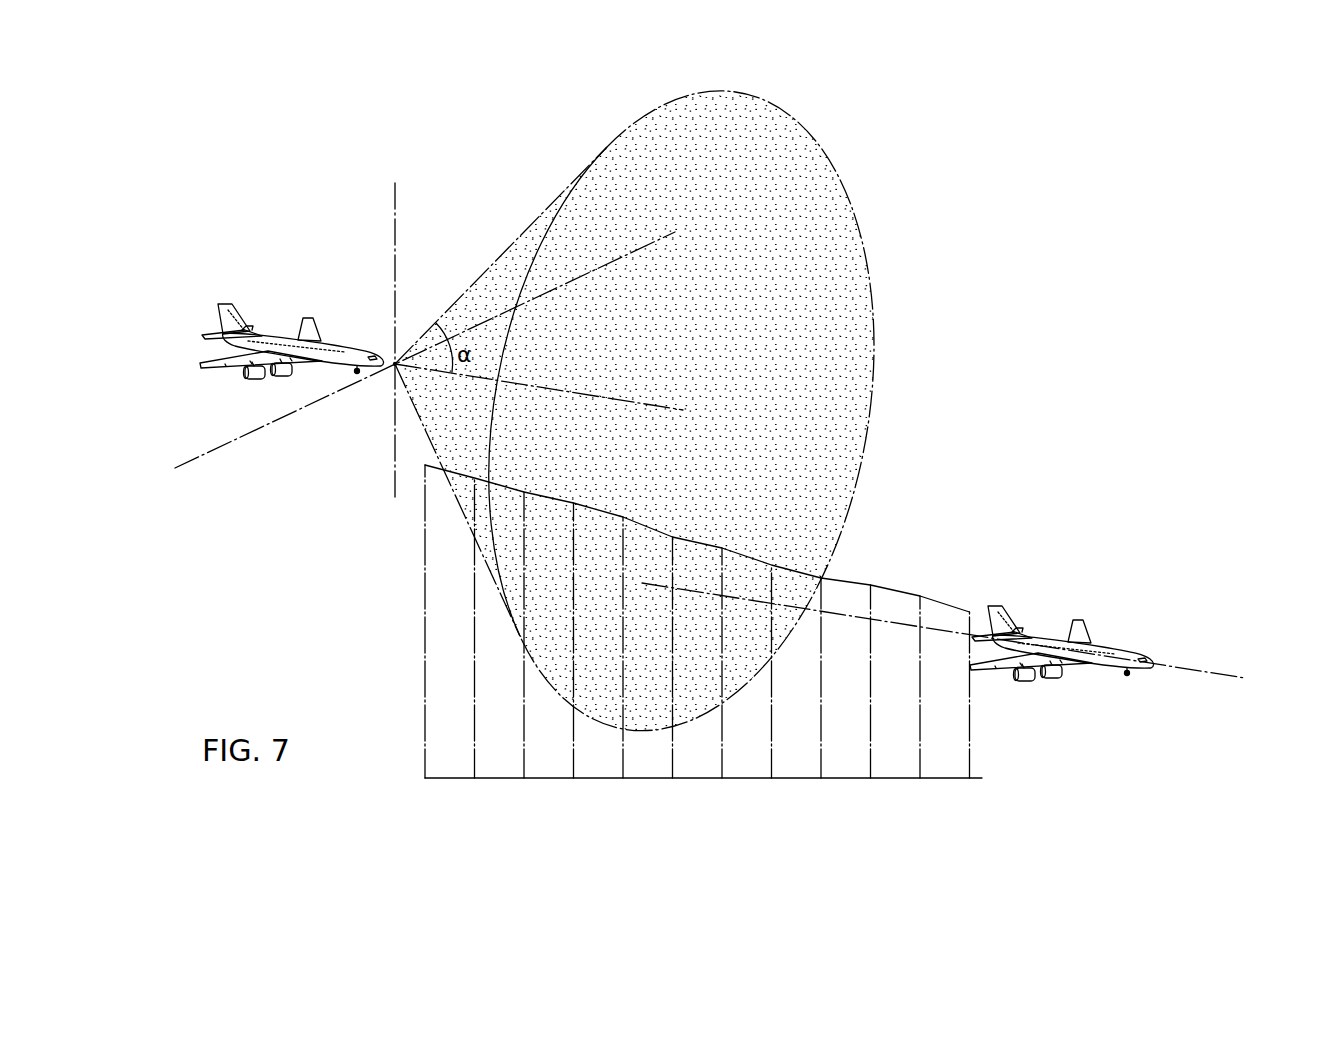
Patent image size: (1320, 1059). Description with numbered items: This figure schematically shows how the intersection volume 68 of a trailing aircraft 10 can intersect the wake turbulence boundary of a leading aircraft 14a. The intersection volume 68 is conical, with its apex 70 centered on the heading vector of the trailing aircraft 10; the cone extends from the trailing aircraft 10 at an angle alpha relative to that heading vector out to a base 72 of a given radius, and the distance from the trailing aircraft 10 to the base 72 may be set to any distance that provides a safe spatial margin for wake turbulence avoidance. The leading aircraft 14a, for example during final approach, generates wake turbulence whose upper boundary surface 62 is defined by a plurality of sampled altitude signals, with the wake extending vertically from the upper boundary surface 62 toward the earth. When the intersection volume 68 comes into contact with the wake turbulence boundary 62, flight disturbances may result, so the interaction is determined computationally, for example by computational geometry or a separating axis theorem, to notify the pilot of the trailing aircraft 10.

The trailing aircraft 10 is at (282, 333).
The leading aircraft 14a is at (1049, 637).
The upper boundary surface of the wake turbulence 62 is at (885, 582).
The intersection volume 68 is at (803, 183).
The apex 70 is at (395, 362).
The base 72 is at (858, 219).